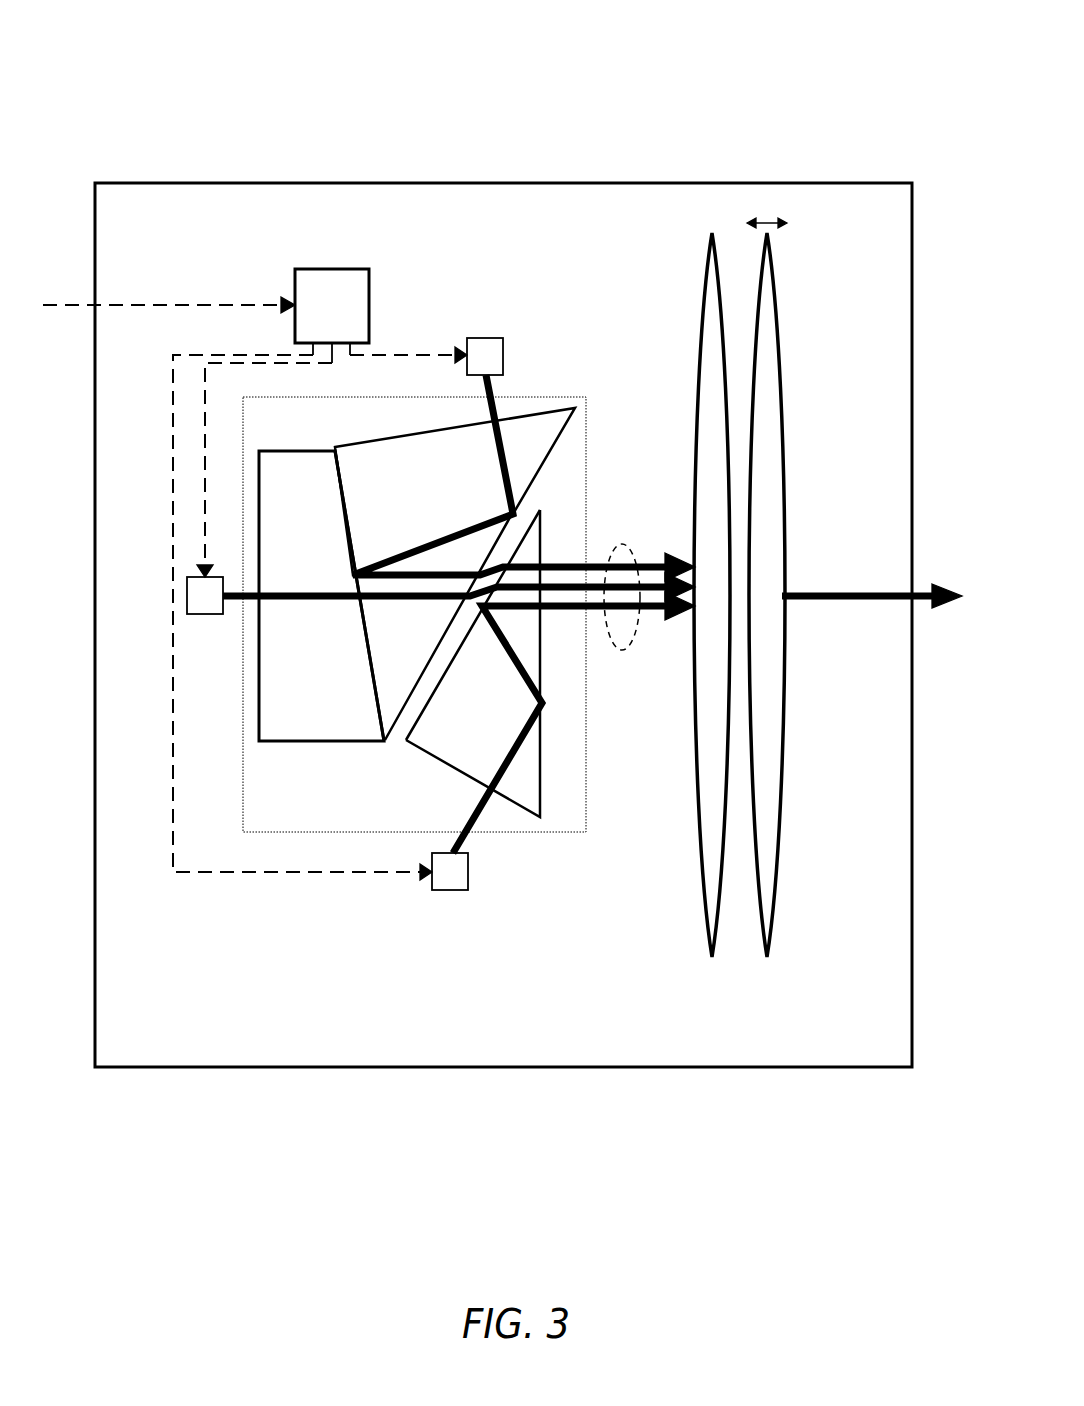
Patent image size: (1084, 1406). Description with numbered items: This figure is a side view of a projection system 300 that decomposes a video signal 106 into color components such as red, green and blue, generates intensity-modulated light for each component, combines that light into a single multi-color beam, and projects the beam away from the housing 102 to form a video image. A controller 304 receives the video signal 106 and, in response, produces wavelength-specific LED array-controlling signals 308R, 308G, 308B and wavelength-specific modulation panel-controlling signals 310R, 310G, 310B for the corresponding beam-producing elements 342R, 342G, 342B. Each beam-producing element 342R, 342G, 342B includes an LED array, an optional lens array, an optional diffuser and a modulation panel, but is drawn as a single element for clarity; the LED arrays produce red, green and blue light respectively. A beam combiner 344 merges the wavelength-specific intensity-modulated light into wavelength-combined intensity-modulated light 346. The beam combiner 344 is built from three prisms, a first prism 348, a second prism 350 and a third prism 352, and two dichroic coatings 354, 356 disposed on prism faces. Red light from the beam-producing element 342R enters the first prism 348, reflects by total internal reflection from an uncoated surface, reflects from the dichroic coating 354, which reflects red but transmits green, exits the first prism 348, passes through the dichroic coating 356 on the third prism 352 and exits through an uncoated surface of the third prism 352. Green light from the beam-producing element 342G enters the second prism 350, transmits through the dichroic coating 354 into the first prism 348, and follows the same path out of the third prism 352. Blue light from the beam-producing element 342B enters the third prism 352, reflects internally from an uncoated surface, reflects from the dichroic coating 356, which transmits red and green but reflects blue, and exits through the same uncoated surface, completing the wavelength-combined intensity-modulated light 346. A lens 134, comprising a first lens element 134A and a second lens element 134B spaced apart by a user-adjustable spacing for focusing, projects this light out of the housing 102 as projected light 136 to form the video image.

The projection system 300 is at (191, 60).
The housing 102 is at (501, 183).
The controller 304 is at (333, 269).
The video signal 106 is at (222, 301).
The LED array-controlling signal 308R is at (408, 310).
The modulation panel-controlling signal 310R is at (418, 352).
The LED array-controlling signal 308G is at (218, 470).
The modulation panel-controlling signal 310G is at (205, 500).
The LED array-controlling signal 308B is at (268, 617).
The modulation panel-controlling signal 310B is at (173, 762).
The beam-producing element 342R is at (486, 338).
The beam-producing element 342G is at (187, 595).
The beam-producing element 342B is at (452, 890).
The beam combiner 344 is at (562, 396).
The wavelength-combined intensity-modulated light 346 is at (622, 543).
The first prism 348 is at (380, 446).
The second prism 350 is at (302, 743).
The third prism 352 is at (458, 773).
The dichroic coating 354 is at (340, 465).
The dichroic coating 356 is at (423, 717).
The lens 134 is at (741, 622).
The first lens element 134A is at (712, 957).
The second lens element 134B is at (767, 957).
The projected light 136 is at (840, 590).